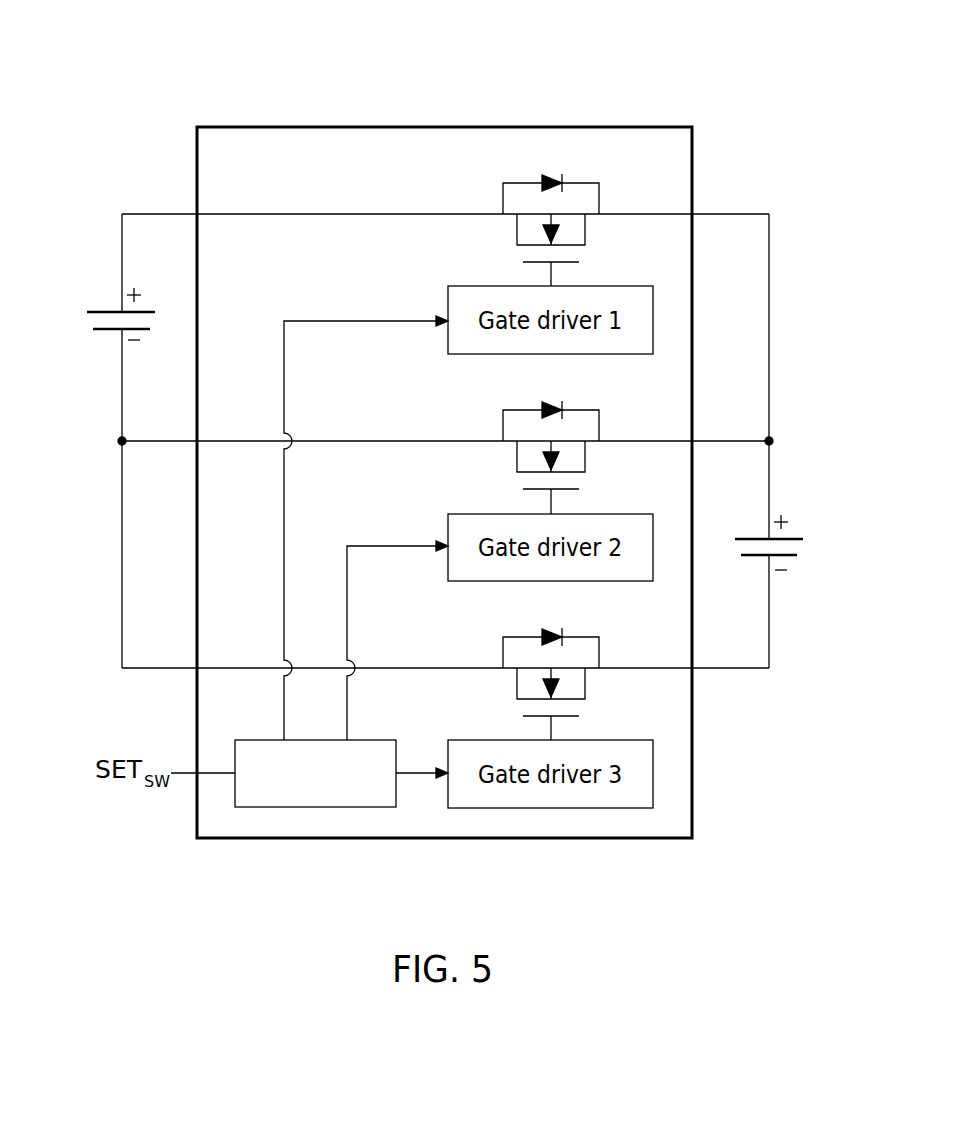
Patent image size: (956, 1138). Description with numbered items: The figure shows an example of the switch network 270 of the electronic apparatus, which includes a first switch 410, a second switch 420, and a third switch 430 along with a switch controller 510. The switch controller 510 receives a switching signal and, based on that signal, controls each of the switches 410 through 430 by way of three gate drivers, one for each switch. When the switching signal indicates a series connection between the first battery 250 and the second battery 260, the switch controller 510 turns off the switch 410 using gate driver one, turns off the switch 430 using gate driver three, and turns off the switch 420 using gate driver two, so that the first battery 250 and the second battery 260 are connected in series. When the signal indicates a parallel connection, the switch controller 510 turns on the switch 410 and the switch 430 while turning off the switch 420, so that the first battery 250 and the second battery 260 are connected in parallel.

The first battery 250 is at (100, 303).
The second battery 260 is at (800, 525).
The switch network 270 is at (692, 127).
The first switch 410 is at (578, 181).
The second switch 420 is at (578, 408).
The third switch 430 is at (578, 635).
The switch controller 510 is at (363, 740).